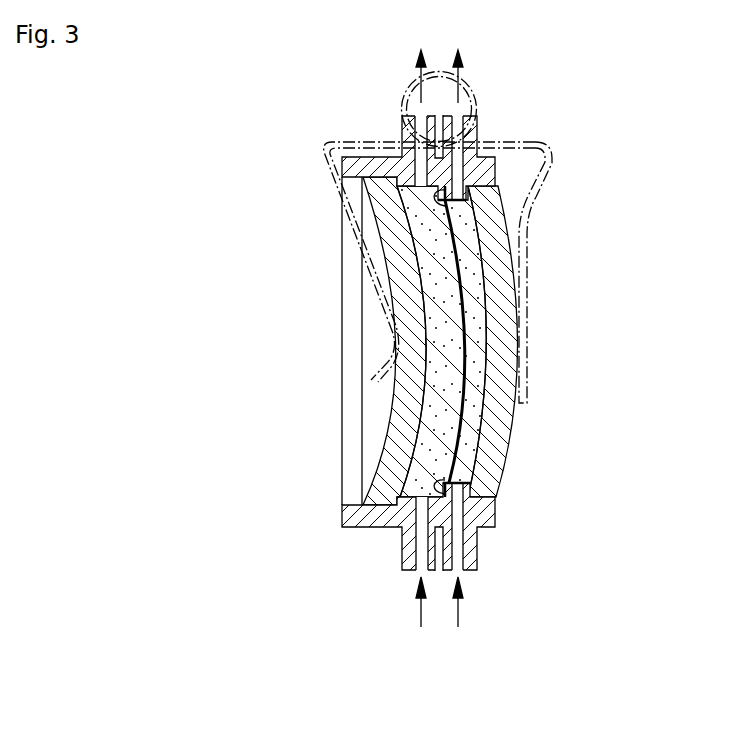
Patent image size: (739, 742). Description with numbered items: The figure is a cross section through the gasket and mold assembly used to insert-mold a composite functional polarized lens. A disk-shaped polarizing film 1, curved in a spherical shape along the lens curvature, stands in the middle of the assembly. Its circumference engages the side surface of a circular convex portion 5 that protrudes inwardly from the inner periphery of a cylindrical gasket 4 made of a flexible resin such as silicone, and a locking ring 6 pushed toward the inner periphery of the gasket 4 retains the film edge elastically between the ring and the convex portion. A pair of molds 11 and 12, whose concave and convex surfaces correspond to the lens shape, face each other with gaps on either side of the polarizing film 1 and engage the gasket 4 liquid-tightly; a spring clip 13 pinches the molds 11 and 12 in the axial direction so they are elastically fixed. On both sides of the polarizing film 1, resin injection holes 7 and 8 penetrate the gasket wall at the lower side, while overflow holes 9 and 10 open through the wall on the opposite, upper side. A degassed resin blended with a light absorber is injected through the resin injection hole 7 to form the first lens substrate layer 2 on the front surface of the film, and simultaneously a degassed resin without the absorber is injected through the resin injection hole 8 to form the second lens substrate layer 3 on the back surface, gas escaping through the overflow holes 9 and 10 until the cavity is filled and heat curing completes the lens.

The polarizing film 1 is at (463, 268).
The first lens substrate layer 2 is at (473, 420).
The second lens substrate layer 3 is at (444, 393).
The gasket 4 is at (473, 168).
The circular convex portion 5 is at (470, 191).
The locking ring 6 is at (452, 206).
The resin injection hole 7 is at (462, 550).
The resin injection hole 8 is at (418, 544).
The overflow hole 9 is at (462, 118).
The overflow hole 10 is at (418, 118).
The mold 11 is at (498, 328).
The mold 12 is at (405, 423).
The spring clip 13 is at (333, 186).